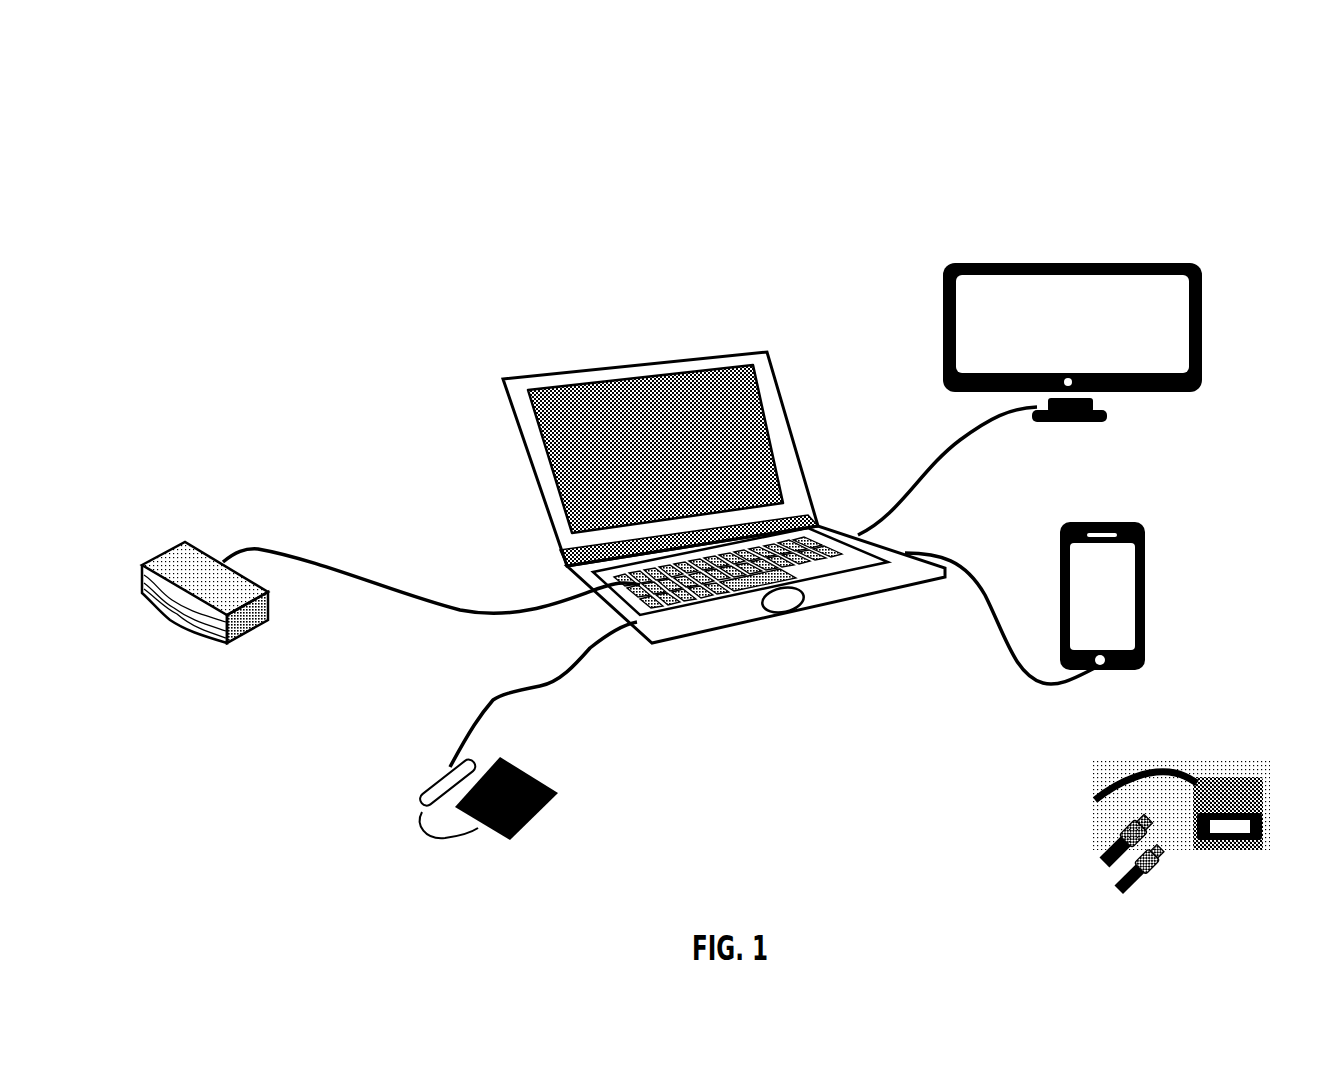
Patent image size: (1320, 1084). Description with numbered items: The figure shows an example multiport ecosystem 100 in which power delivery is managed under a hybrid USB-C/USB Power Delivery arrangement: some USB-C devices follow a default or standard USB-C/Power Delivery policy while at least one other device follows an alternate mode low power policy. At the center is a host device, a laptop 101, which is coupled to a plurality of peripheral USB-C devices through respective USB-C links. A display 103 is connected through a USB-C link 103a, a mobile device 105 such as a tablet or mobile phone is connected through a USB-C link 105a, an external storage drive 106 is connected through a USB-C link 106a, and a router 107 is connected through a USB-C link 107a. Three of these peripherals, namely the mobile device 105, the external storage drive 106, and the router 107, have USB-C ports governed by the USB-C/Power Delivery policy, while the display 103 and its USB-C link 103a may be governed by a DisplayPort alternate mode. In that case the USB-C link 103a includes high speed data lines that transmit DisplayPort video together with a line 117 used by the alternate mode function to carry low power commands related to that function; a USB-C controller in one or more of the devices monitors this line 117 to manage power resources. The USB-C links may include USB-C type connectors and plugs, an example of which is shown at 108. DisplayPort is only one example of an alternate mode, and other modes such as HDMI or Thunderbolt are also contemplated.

The multiport ecosystem 100 is at (1158, 80).
The laptop 101 is at (615, 367).
The display 103 is at (1147, 262).
The USB-C link 103a is at (943, 463).
The mobile device 105 is at (1097, 520).
The USB-C link 105a is at (1003, 637).
The external storage drive 106 is at (533, 810).
The USB-C link 106a is at (563, 680).
The router 107 is at (202, 545).
The USB-C link 107a is at (378, 593).
The USB-C type connectors and plugs 108 is at (1160, 763).
The line used by an alternate mode function 117 is at (898, 470).